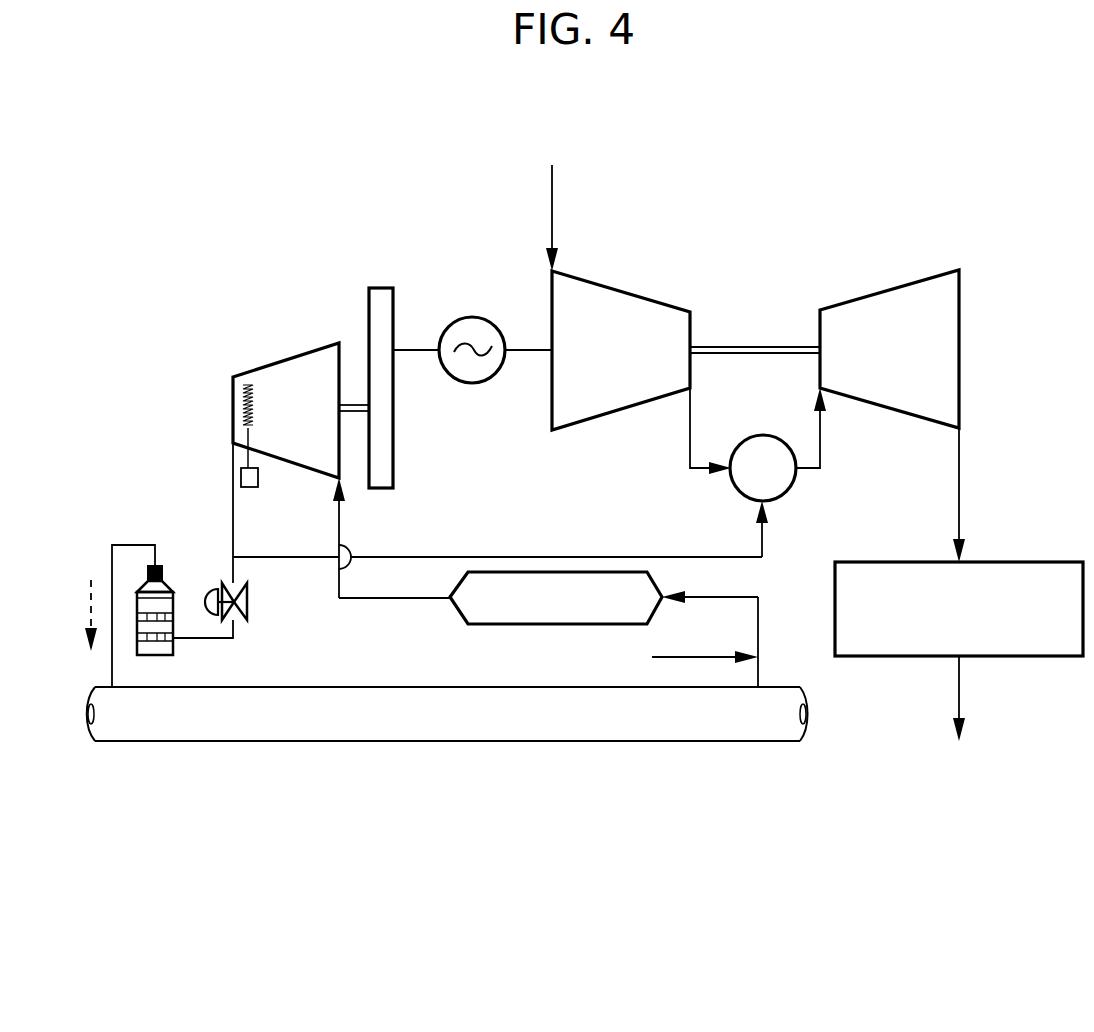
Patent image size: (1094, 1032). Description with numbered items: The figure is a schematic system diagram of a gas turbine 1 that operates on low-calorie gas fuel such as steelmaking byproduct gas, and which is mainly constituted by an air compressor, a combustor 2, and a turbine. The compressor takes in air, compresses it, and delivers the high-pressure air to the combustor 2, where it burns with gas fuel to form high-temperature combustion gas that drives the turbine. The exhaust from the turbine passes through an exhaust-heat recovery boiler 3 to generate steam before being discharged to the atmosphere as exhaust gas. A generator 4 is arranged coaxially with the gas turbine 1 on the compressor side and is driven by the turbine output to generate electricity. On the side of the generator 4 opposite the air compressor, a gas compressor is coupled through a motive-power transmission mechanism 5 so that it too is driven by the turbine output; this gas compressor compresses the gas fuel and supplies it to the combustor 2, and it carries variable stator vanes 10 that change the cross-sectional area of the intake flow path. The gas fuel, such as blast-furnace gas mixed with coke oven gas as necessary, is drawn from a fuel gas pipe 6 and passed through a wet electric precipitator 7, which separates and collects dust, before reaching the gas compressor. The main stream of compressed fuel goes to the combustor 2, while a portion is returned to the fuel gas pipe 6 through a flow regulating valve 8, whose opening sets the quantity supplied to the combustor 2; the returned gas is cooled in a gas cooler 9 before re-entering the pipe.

The gas turbine 1 is at (786, 162).
The combustor 2 is at (795, 490).
The exhaust-heat recovery boiler 3 is at (835, 604).
The generator 4 is at (475, 317).
The motive-power transmission mechanism 5 is at (381, 288).
The fuel gas pipe 6 is at (580, 742).
The wet electric precipitator 7 is at (505, 626).
The flow regulating valve 8 is at (205, 590).
The gas cooler 9 is at (166, 655).
The variable stator vanes 10 is at (236, 398).